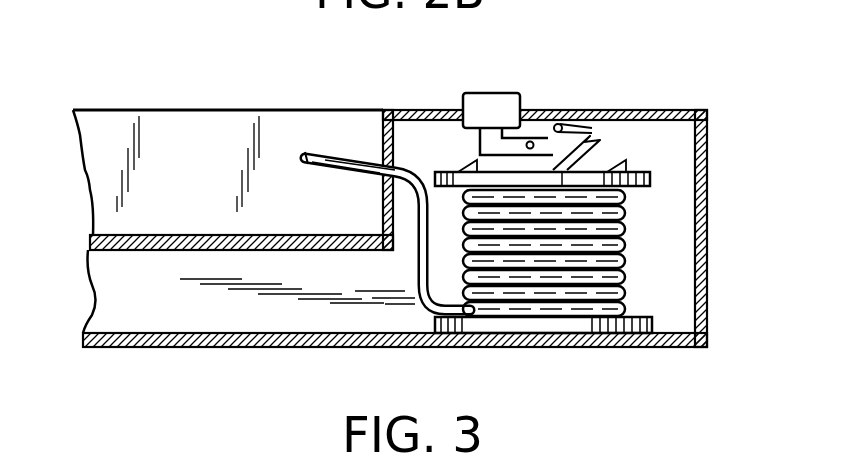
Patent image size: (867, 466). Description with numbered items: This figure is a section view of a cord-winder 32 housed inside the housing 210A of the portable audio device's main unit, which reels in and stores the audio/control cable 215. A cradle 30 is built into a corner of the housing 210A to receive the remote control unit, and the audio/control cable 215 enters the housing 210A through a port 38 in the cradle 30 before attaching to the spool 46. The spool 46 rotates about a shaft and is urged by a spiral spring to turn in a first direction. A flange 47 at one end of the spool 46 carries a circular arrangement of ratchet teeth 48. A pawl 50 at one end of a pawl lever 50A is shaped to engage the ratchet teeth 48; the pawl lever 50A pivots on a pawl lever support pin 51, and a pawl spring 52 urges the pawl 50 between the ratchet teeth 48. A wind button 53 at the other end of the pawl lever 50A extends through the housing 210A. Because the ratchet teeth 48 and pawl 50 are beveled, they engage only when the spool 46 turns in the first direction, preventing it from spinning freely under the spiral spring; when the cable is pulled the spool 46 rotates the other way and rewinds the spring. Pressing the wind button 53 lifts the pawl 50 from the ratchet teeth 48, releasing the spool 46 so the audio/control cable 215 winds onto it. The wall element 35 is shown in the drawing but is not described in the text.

The cradle 30 is at (193, 120).
The cord-winder 32 is at (711, 78).
The bottom wall 35 is at (165, 350).
The port 38 is at (380, 152).
The spool 46 is at (642, 344).
The flange 47 is at (652, 181).
The ratchet teeth 48 is at (625, 163).
The pawl 50 is at (586, 157).
The pawl lever 50A is at (480, 149).
The pawl lever support pin 51 is at (531, 141).
The pawl spring 52 is at (568, 130).
The wind button 53 is at (462, 107).
The housing 210A is at (316, 350).
The audio/control cable 215 is at (325, 150).